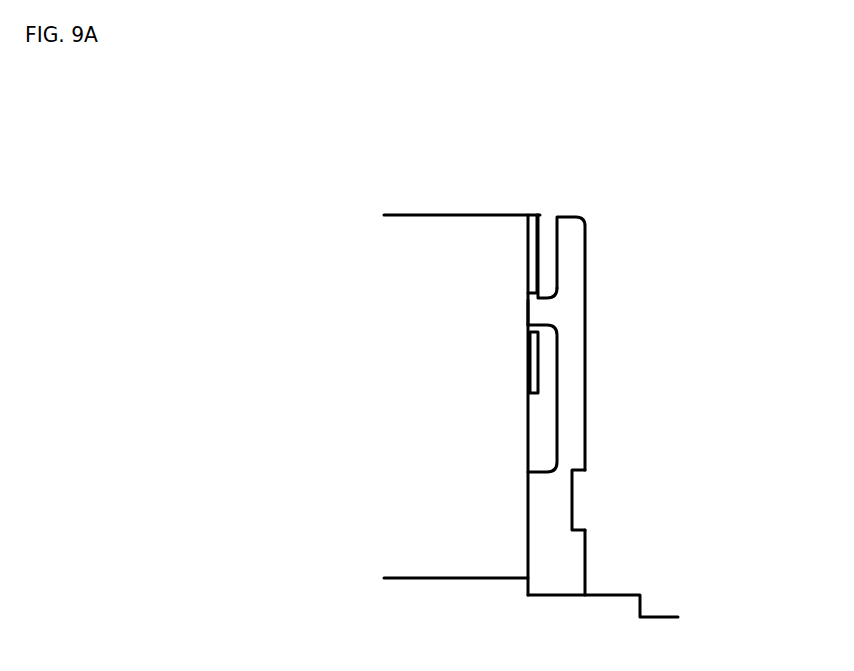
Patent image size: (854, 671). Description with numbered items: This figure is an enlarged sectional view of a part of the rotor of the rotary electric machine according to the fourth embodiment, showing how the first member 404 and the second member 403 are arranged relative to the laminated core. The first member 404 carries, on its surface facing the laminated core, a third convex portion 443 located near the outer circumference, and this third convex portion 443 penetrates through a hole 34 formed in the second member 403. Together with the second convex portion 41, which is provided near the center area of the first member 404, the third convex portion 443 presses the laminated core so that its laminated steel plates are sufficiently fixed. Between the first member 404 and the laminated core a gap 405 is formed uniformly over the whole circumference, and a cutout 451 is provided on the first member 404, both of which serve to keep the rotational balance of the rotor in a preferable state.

The hole 34 is at (528, 313).
The second convex portion 41 is at (542, 527).
The second member 403 is at (528, 362).
The first member 404 is at (565, 253).
The gap 405 is at (548, 242).
The third convex portion 443 is at (532, 315).
The cutout 451 is at (575, 528).